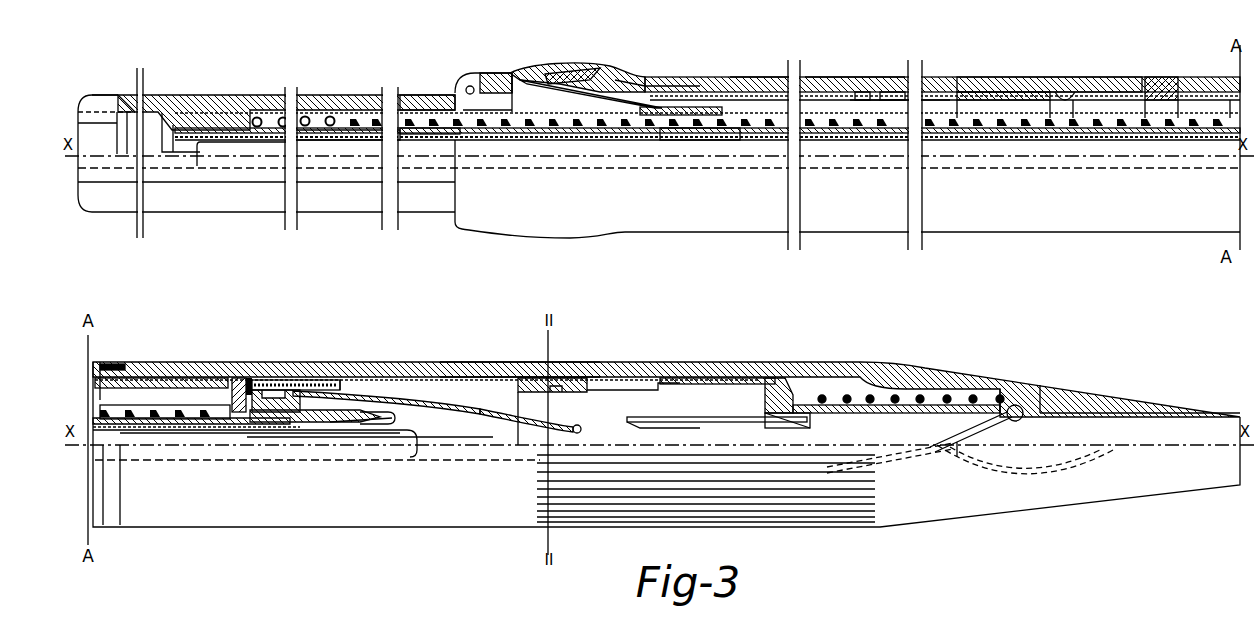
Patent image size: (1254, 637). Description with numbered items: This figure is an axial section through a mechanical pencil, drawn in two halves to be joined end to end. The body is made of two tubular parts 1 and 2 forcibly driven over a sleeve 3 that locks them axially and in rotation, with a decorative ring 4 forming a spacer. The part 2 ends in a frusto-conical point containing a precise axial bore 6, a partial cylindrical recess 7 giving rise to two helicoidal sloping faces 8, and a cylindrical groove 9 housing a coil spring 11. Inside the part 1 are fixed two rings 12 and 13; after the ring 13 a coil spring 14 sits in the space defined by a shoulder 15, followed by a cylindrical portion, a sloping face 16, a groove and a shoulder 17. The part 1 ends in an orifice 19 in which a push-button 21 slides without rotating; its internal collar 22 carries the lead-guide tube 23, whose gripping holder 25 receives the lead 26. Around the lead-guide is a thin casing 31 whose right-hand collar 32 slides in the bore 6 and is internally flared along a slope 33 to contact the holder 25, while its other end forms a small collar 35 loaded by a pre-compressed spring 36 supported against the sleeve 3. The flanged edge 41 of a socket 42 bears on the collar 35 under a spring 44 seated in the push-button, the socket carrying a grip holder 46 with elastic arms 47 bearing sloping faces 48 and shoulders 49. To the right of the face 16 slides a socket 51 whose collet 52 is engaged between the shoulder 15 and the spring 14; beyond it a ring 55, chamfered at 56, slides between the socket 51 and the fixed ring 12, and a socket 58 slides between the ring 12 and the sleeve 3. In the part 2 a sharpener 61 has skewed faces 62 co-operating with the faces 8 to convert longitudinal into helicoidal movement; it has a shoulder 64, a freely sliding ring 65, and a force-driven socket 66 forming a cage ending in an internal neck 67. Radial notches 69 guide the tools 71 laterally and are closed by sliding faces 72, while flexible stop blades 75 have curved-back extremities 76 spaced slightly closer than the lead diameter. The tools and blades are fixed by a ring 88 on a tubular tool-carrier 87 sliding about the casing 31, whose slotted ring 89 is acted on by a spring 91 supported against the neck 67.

The body part 1 is at (495, 85).
The body part 2 is at (505, 366).
The sleeve 3 is at (160, 368).
The decorative ring 4 is at (112, 365).
The axial bore 6 is at (1140, 417).
The partial cylindrical recess 7 is at (1040, 420).
The sloping faces 8 is at (1020, 412).
The cylindrical groove 9 is at (1005, 388).
The coil spring 11 is at (850, 395).
The ring 12 is at (1160, 80).
The ring 13 is at (975, 78).
The coil spring 14 is at (888, 80).
The shoulder 15 is at (838, 82).
The sloping face 16 is at (590, 67).
The shoulder 17 is at (528, 82).
The orifice 19 is at (476, 88).
The push-button 21 is at (162, 100).
The internal collar 22 is at (215, 112).
The lead-guide tube 23 is at (258, 127).
The gripping holder 25 is at (385, 426).
The lead 26 is at (290, 452).
The casing 31 is at (693, 129).
The cylindrical collar 32 is at (350, 423).
The slope 33 is at (390, 414).
The small collar 35 is at (345, 126).
The coil spring 36 is at (415, 129).
The internal flanged edge 41 is at (340, 118).
The socket 42 is at (425, 100).
The coil spring 44 is at (305, 117).
The grip holder 46 is at (706, 106).
The elastic arms 47 is at (620, 79).
The sloping faces 48 is at (570, 75).
The shoulders 49 is at (648, 82).
The socket 51 is at (752, 78).
The collet 52 is at (870, 91).
The ring 55 is at (1020, 92).
The internal chamfer 56 is at (1076, 98).
The socket 58 is at (130, 382).
The sharpener 61 is at (780, 392).
The skewed faces 62 is at (850, 465).
The shoulder 64 is at (650, 378).
The ring 65 is at (575, 385).
The socket 66 is at (465, 376).
The internal neck 67 is at (248, 380).
The notches 69 is at (725, 405).
The tool 71 is at (690, 416).
The sliding faces 72 is at (790, 405).
The stop blades 75 is at (430, 405).
The curved-back extremities 76 is at (570, 431).
The tubular tool-carrier 87 is at (325, 383).
The ring 88 is at (272, 392).
The ring 89 is at (355, 395).
The spring 91 is at (300, 384).